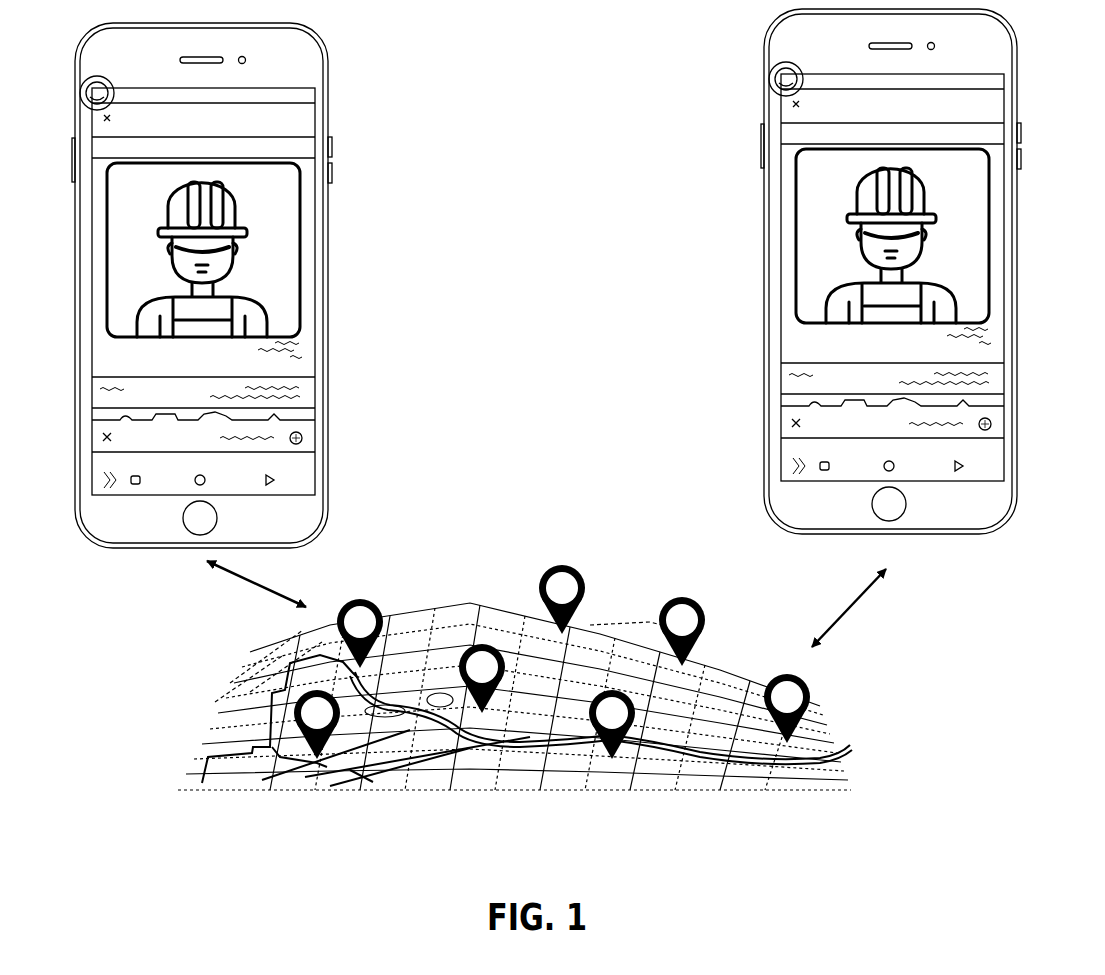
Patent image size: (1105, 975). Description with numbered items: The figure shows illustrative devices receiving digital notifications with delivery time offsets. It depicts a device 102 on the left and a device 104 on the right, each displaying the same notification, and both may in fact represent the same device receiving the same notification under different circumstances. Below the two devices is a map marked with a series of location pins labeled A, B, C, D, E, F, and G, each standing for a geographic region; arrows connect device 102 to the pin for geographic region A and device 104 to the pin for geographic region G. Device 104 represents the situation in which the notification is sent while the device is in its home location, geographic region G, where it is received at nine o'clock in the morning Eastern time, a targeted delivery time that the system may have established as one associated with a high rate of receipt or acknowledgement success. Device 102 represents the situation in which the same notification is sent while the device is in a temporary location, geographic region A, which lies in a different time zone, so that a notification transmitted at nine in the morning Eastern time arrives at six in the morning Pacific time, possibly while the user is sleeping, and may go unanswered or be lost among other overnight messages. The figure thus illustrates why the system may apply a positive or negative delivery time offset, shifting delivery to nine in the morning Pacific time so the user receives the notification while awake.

The device 102 is at (318, 105).
The device 104 is at (1004, 104).
The geographic region A is at (360, 633).
The location pin B is at (317, 724).
The location pin C is at (482, 678).
The location pin D is at (562, 599).
The location pin E is at (612, 724).
The location pin F is at (682, 631).
The geographic region G is at (787, 708).